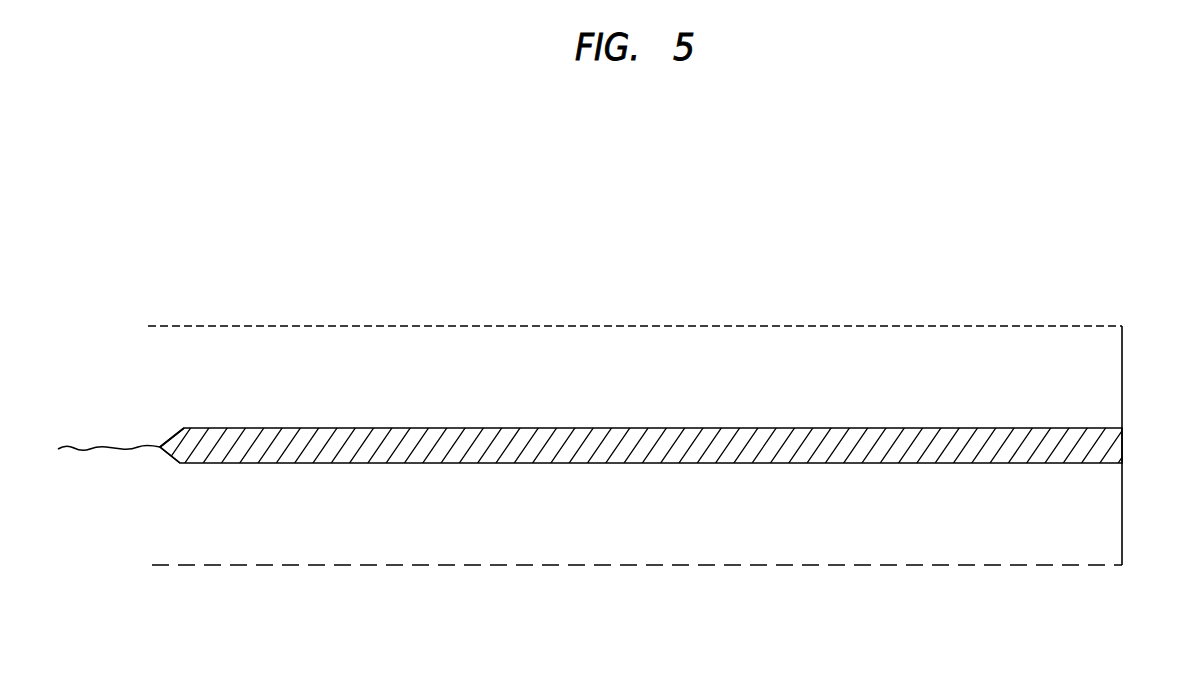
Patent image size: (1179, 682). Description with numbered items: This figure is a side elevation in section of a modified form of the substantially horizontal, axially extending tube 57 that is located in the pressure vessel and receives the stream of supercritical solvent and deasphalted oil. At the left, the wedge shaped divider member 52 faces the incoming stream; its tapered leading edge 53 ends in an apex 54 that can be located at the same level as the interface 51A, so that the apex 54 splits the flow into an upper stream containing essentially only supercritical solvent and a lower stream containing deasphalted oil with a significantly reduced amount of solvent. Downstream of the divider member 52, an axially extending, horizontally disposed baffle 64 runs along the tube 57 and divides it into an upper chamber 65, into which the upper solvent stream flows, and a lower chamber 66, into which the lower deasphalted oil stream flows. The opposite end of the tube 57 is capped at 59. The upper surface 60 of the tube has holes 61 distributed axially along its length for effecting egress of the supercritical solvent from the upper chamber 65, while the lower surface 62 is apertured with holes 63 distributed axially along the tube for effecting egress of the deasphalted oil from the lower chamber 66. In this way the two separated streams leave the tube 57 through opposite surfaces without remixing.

The interface 51A is at (73, 448).
The wedge shaped divider member 52 is at (178, 464).
The tapered leading edge 53 is at (180, 403).
The apex 54 is at (160, 445).
The tube 57 is at (890, 578).
The cap 59 is at (1123, 498).
The upper surface 60 is at (639, 326).
The holes 61 is at (529, 326).
The lower surface 62 is at (490, 566).
The holes 63 is at (247, 566).
The baffle 64 is at (340, 403).
The upper chamber 65 is at (644, 401).
The lower chamber 66 is at (643, 524).